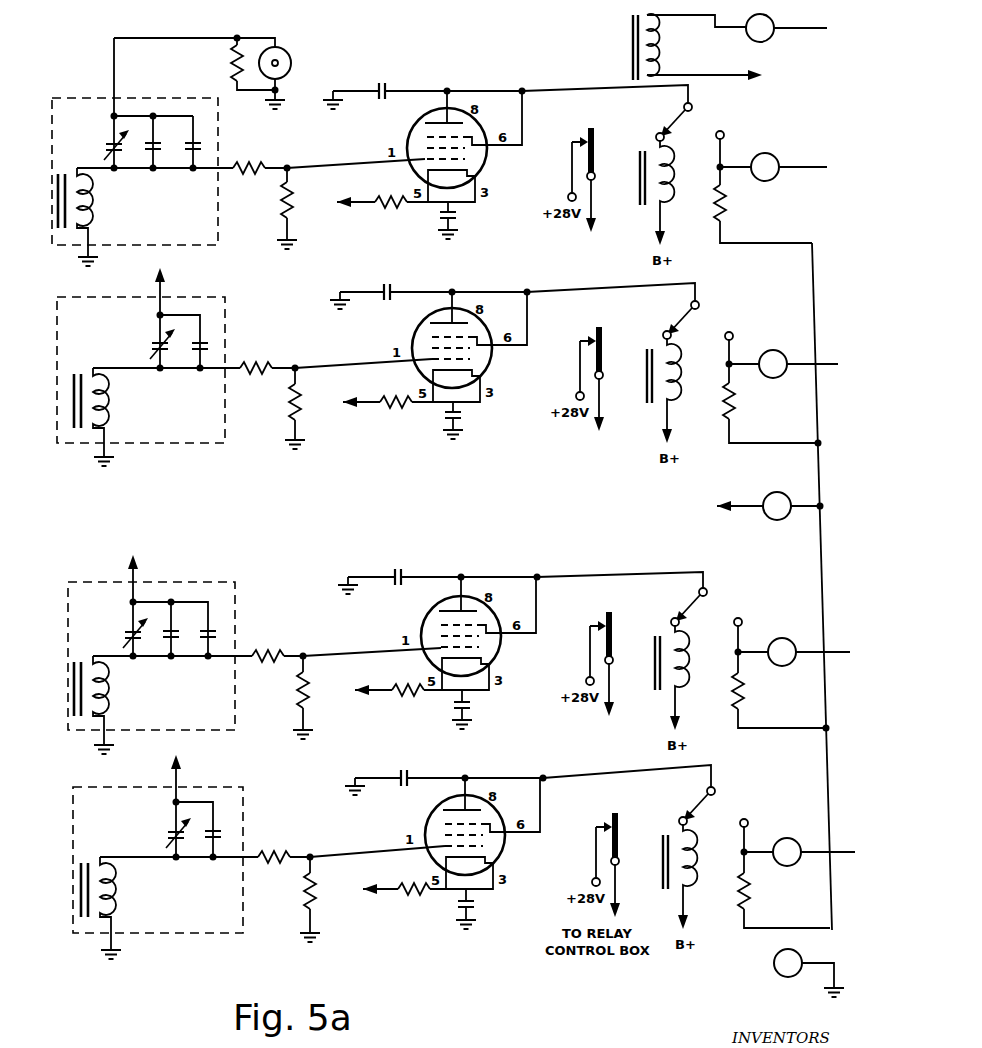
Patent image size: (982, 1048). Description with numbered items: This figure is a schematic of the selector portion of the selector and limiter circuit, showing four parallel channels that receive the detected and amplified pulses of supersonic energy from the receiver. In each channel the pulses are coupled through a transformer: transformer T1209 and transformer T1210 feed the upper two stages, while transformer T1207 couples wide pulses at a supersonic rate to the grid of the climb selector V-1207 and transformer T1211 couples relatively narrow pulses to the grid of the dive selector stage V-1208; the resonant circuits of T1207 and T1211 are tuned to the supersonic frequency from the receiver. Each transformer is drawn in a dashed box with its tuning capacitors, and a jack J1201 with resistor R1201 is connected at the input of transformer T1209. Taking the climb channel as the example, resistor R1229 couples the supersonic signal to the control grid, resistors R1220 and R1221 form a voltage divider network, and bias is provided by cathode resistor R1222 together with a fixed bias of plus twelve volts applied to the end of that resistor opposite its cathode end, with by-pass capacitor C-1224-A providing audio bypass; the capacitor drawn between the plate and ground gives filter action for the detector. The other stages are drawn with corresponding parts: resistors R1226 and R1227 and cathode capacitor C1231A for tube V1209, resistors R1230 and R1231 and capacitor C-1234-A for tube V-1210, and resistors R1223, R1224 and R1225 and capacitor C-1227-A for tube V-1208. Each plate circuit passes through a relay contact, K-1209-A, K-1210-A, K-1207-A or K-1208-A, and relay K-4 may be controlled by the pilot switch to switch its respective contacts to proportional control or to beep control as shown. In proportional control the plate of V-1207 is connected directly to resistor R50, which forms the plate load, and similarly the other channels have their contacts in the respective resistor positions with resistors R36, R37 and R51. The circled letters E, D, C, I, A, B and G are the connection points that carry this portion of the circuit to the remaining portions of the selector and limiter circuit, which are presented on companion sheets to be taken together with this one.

The transformer T1209 is at (142, 152).
The jack J1201 is at (224, 72).
The resistor R1201 is at (226, 64).
The resistor R1226 is at (326, 160).
The resistor R1227 is at (262, 208).
The vacuum tube V1209 is at (499, 141).
The capacitor C1231A is at (477, 220).
The relay K-4 is at (717, 47).
The relay K-1209-A is at (652, 184).
The resistor R36 is at (763, 187).
The transformer T1210 is at (148, 367).
The resistor R1229 is at (333, 358).
The resistor R1230 is at (273, 408).
The vacuum tube V-1210 is at (504, 339).
The resistor R1231 is at (403, 414).
The capacitor C-1234-A is at (489, 420).
The relay K-1210-A is at (656, 383).
The resistor R37 is at (772, 389).
The transformer T1207 is at (160, 654).
The resistor R1220 is at (340, 646).
The resistor R1221 is at (280, 697).
The selector V-1207 is at (508, 627).
The cathode resistor R1222 is at (409, 701).
The by-pass capacitor C-1224-A is at (498, 709).
The relay K-1207-A is at (663, 670).
The resistor R50 is at (781, 675).
The transformer T1211 is at (165, 857).
The resistor R1223 is at (346, 847).
The resistor R1224 is at (286, 899).
The dive selector stage V-1208 is at (520, 825).
The resistor R1225 is at (413, 900).
The capacitor C-1227-A is at (502, 909).
The relay K-1208-A is at (671, 869).
The resistor R51 is at (784, 873).
The terminal E (A1) E is at (790, 25).
The terminal D (B1) D is at (778, 165).
The terminal C (C1) C is at (785, 362).
The terminal I (D1, +200V DC) I is at (747, 510).
The terminal A (E1) A is at (794, 650).
The terminal B (F1) B is at (800, 850).
The terminal G (ground) G is at (809, 973).